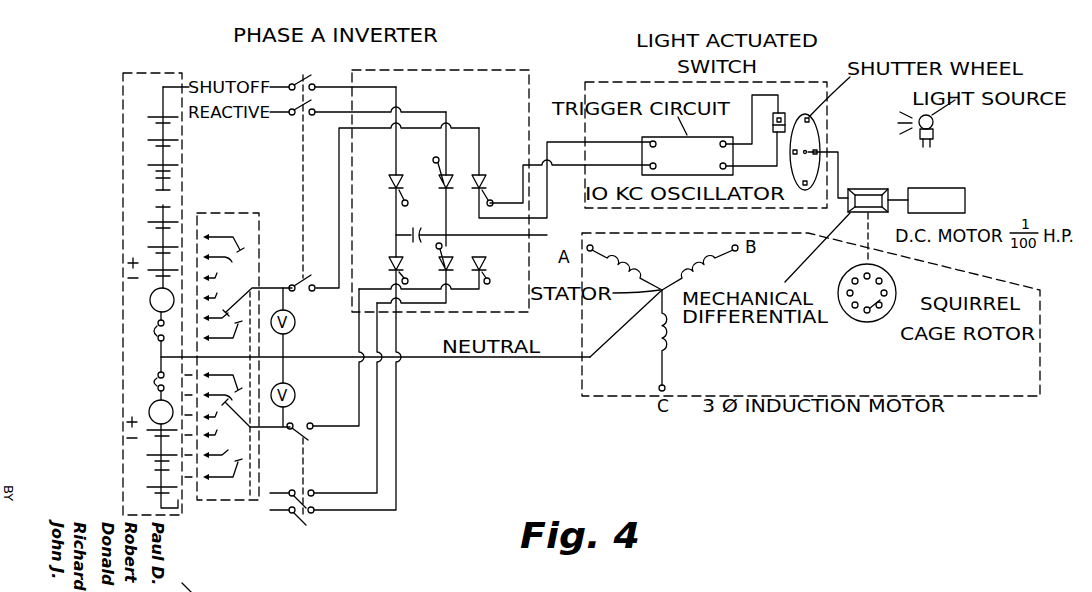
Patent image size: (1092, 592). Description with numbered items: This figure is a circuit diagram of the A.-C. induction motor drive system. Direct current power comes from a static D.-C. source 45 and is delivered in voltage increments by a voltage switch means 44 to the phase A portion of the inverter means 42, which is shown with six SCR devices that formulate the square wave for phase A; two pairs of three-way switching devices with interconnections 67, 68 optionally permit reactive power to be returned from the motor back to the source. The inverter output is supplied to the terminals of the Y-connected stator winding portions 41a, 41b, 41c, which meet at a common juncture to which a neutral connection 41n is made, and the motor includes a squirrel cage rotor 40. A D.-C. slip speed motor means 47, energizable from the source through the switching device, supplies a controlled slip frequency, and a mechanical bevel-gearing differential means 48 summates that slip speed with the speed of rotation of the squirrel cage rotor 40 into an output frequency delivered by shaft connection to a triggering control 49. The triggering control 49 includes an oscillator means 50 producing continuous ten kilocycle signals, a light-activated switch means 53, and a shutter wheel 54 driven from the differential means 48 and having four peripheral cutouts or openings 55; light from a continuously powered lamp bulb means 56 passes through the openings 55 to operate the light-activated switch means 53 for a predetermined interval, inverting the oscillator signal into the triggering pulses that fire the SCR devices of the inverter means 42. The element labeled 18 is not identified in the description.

The static D.-C. source 45 is at (122, 137).
The voltage switch means 44 is at (230, 212).
The interconnection of three-way switching devices 67 is at (303, 185).
The interconnection of three-way switching devices 68 is at (303, 462).
The inverter means 42 is at (462, 70).
The triggering control 49 is at (812, 80).
The oscillator means 50 is at (648, 137).
The light-activated switch means 53 is at (752, 118).
The light actuated switch element 18 is at (779, 112).
The cutouts or openings 55 is at (810, 140).
The shutter wheel 54 is at (838, 158).
The lamp bulb means 56 is at (935, 125).
The mechanical bevel-gearing differential means 48 is at (872, 186).
The D.-C. slip speed motor means 47 is at (965, 190).
The squirrel cage rotor 40 is at (896, 290).
The stator winding portion 41a is at (624, 265).
The stator winding portion 41b is at (700, 264).
The stator winding portion 41c is at (668, 343).
The neutral connection 41n is at (614, 340).